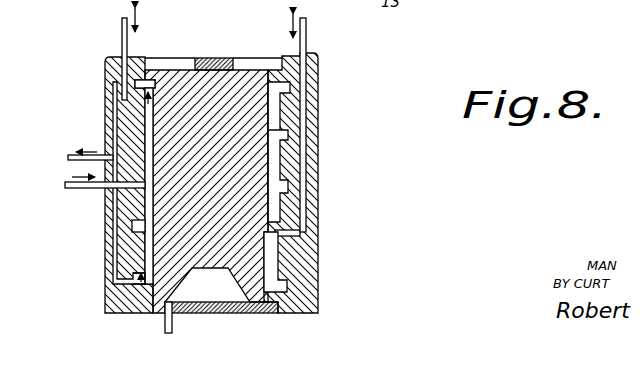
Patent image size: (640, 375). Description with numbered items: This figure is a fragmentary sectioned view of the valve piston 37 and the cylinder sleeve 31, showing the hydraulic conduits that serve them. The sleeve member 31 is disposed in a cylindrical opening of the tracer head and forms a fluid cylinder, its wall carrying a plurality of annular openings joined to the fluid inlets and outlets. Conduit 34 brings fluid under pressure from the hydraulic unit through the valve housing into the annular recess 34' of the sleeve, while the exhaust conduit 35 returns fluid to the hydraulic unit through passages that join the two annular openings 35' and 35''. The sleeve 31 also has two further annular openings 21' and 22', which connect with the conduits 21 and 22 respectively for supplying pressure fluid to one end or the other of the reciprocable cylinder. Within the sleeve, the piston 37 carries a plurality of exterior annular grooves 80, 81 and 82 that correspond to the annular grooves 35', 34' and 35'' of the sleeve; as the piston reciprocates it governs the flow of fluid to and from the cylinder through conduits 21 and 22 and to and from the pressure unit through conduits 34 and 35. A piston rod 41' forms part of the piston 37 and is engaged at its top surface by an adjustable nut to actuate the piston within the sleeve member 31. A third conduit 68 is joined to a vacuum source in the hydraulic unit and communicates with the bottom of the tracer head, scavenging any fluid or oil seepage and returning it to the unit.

The conduit 21 is at (325, 123).
The annular opening 21' is at (328, 222).
The conduit 22 is at (111, 54).
The annular opening 22' is at (105, 183).
The sleeve member 31 is at (105, 275).
The conduit 34 is at (97, 197).
The annular recess 34' is at (97, 225).
The exhaust conduit 35 is at (84, 147).
The annular opening 35' is at (159, 148).
The annular opening 35'' is at (97, 307).
The valve piston 37 is at (247, 80).
The piston rod 41' is at (213, 49).
The third conduit 68 is at (166, 316).
The exterior annular groove 80 is at (273, 107).
The exterior annular groove 81 is at (273, 170).
The exterior annular groove 82 is at (272, 262).